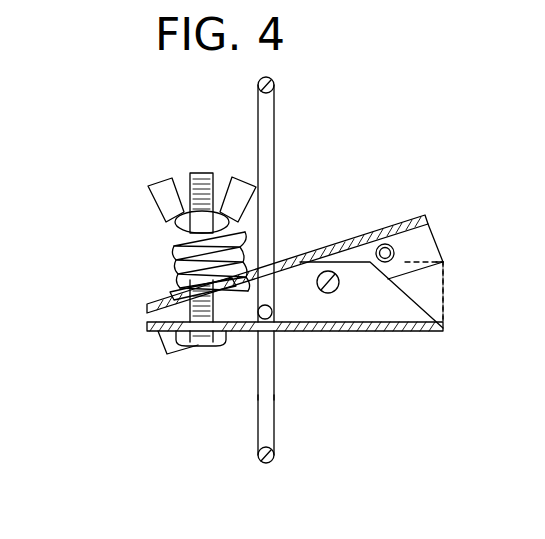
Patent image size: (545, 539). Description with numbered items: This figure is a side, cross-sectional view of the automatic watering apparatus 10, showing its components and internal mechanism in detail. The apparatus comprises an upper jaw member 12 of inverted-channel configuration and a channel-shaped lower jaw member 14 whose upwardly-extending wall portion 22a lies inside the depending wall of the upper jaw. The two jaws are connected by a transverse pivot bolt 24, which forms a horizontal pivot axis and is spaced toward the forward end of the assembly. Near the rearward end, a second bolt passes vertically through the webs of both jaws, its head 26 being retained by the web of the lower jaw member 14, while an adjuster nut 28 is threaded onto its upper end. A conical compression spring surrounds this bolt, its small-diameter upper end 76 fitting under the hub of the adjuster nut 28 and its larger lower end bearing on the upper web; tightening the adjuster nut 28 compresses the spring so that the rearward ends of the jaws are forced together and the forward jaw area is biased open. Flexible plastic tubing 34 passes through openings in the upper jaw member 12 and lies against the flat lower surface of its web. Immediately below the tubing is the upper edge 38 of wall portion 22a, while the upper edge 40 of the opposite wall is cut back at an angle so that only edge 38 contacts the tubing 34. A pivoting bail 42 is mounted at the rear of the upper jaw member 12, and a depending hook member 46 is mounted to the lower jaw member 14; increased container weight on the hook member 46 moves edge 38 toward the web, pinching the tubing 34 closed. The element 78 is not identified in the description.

The automatic watering apparatus 10 is at (98, 388).
The upper jaw member 12 is at (371, 220).
The lower jaw member 14 is at (357, 336).
The wall portion 22a is at (443, 310).
The pivot bolt 24 is at (335, 292).
The head 26 is at (204, 350).
The adjuster nut 28 is at (147, 200).
The flexible plastic tubing 34 is at (395, 250).
The upper edge 38 is at (427, 259).
The upper edge 40 is at (413, 303).
The pivoting bail 42 is at (274, 141).
The hook member 46 is at (258, 396).
The small-diameter upper end 76 is at (222, 233).
The washer 78 is at (176, 294).